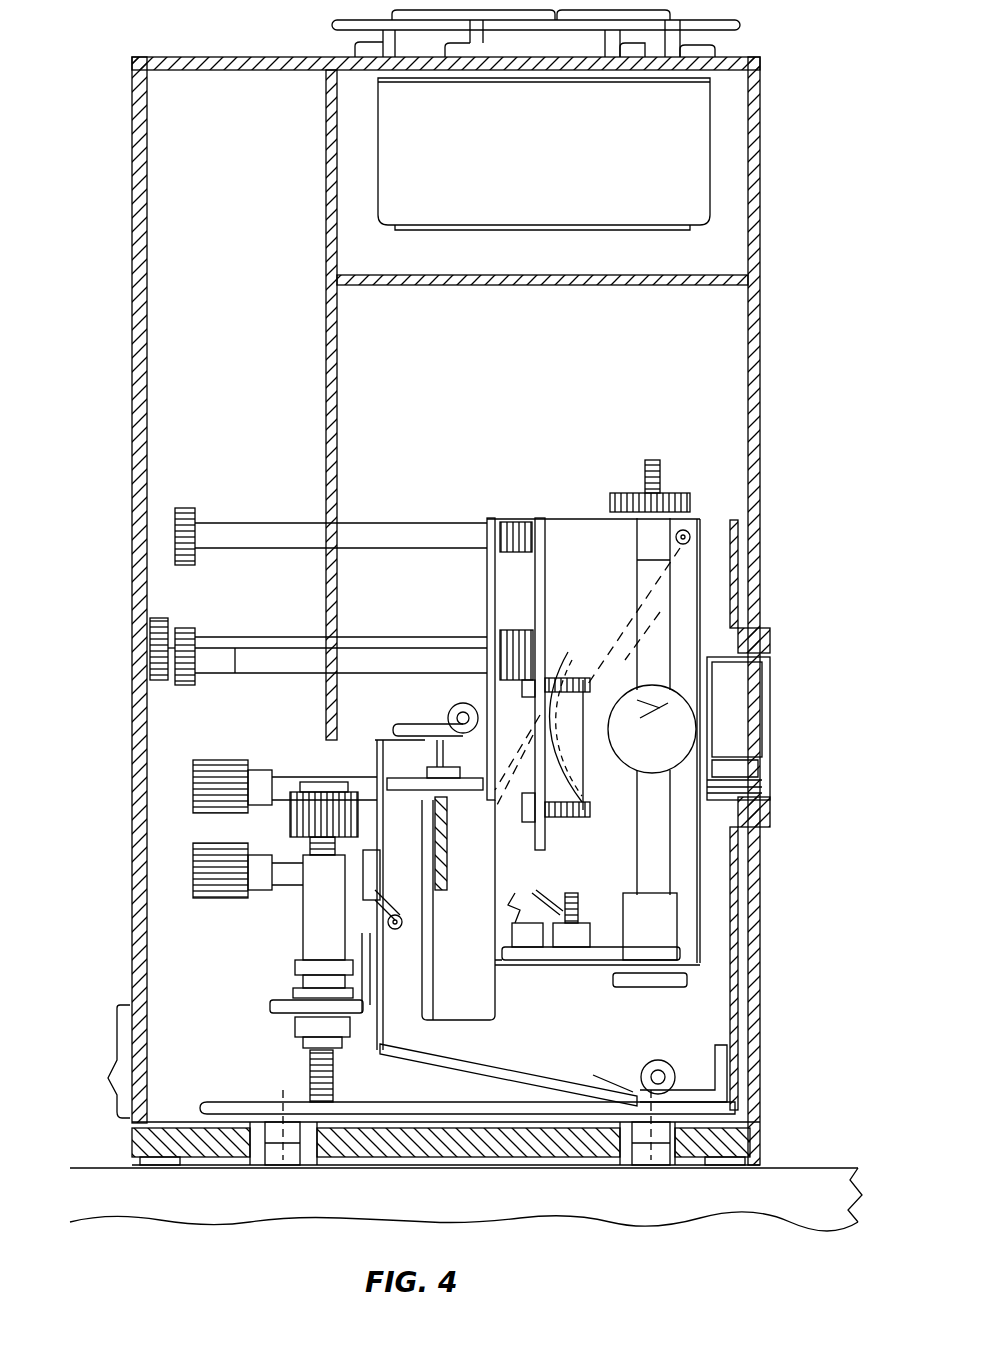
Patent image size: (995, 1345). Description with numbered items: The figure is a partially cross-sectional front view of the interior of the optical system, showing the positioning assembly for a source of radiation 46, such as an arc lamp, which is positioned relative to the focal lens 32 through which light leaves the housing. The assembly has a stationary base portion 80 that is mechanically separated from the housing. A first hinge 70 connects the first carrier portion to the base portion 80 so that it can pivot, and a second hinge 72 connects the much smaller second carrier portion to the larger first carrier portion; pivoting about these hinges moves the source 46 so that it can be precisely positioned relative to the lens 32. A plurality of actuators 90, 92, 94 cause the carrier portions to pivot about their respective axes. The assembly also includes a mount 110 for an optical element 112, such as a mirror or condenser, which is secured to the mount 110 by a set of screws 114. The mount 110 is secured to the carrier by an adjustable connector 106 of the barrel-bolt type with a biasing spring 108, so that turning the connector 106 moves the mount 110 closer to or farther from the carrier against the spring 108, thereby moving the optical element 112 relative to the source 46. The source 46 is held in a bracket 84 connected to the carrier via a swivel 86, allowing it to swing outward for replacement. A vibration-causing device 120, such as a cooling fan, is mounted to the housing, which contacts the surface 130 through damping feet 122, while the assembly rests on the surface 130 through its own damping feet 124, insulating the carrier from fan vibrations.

The focal lens 32 is at (745, 722).
The source of radiation 46 is at (668, 757).
The first hinge 70 is at (660, 1066).
The second hinge 72 is at (450, 713).
The base portion 80 is at (240, 1102).
The bracket 84 is at (582, 962).
The swivel 86 is at (525, 920).
The actuator 90 is at (305, 812).
The actuator 92 is at (193, 872).
The actuator 94 is at (193, 785).
The adjustable connector 106 is at (185, 628).
The biasing spring 108 is at (520, 522).
The mount 110 is at (547, 553).
The optical element 112 is at (568, 655).
The screws 114 is at (570, 818).
The vibration-causing device 120 is at (560, 157).
The damping feet 122 is at (135, 1160).
The damping feet 124 is at (283, 1162).
The surface 130 is at (826, 1208).